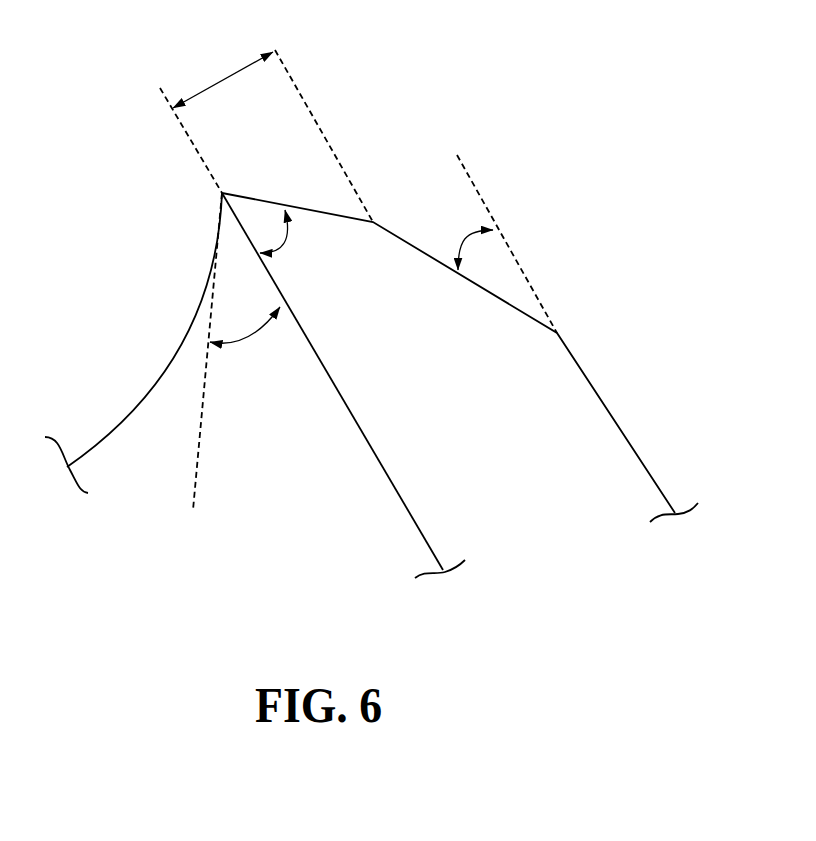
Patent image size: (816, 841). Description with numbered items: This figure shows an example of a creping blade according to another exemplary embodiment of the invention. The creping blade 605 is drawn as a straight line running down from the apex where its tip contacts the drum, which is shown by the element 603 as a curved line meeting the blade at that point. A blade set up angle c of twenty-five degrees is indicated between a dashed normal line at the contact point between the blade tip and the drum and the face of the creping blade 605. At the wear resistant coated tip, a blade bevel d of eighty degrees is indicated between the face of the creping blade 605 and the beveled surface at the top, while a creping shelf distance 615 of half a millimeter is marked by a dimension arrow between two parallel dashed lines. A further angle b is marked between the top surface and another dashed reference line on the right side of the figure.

The curved surface 603 is at (124, 312).
The creping blade 605 is at (368, 447).
The creping shelf distance 615 is at (223, 78).
The angle b is at (460, 238).
The blade set up angle c is at (250, 341).
The blade bevel d is at (283, 242).